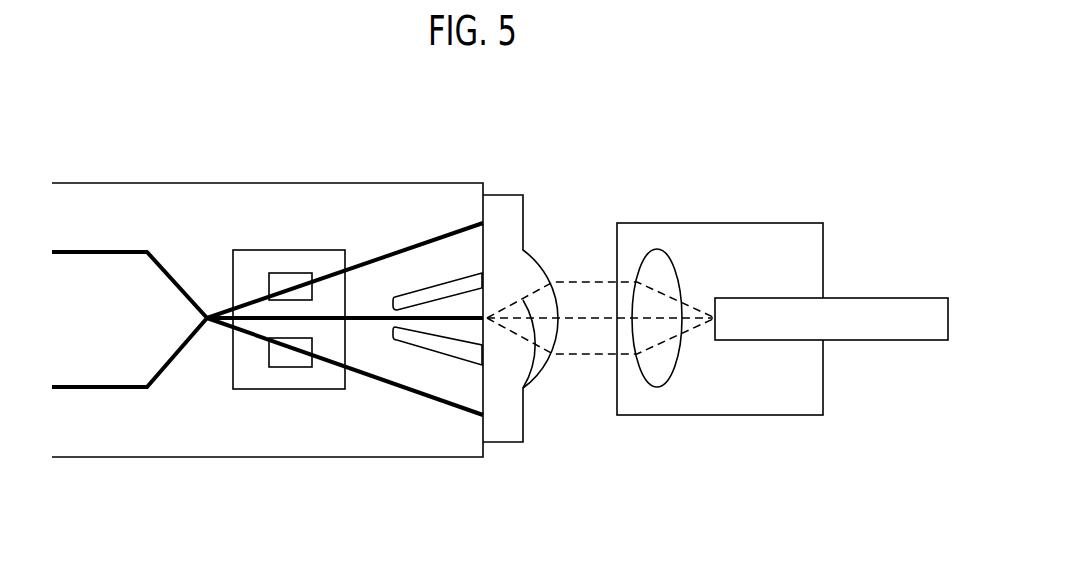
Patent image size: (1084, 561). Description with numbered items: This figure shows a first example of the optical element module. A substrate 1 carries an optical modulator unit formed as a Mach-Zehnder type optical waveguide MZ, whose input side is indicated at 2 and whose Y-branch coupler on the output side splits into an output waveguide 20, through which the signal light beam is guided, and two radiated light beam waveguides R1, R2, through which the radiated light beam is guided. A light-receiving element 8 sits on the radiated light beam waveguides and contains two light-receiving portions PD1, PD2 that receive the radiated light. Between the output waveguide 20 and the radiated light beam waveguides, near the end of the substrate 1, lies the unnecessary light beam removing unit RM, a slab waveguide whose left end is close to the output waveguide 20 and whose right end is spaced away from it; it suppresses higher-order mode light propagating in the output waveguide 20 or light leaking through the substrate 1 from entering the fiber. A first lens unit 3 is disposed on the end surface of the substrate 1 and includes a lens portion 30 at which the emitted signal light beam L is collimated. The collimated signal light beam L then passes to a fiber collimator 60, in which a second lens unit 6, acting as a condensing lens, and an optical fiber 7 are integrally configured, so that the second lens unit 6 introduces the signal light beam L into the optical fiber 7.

The substrate 1 is at (377, 203).
The input optical waveguide 2 is at (126, 398).
The first lens unit 3 is at (498, 194).
The second lens unit 6 is at (672, 380).
The optical fiber 7 is at (867, 340).
The monitor photodiode unit 8 is at (255, 245).
The output waveguide 20 is at (372, 322).
The lens portion 30 is at (549, 381).
The fiber collimator 60 is at (725, 415).
The Mach-Zehnder type optical waveguide MZ is at (129, 301).
The light-receiving portion PD1 is at (288, 272).
The light-receiving portion PD2 is at (288, 368).
The radiated light beam waveguide R1 is at (447, 233).
The radiated light beam waveguide R2 is at (441, 400).
The unnecessary light beam removing unit RM is at (458, 347).
The signal light beam L is at (572, 281).